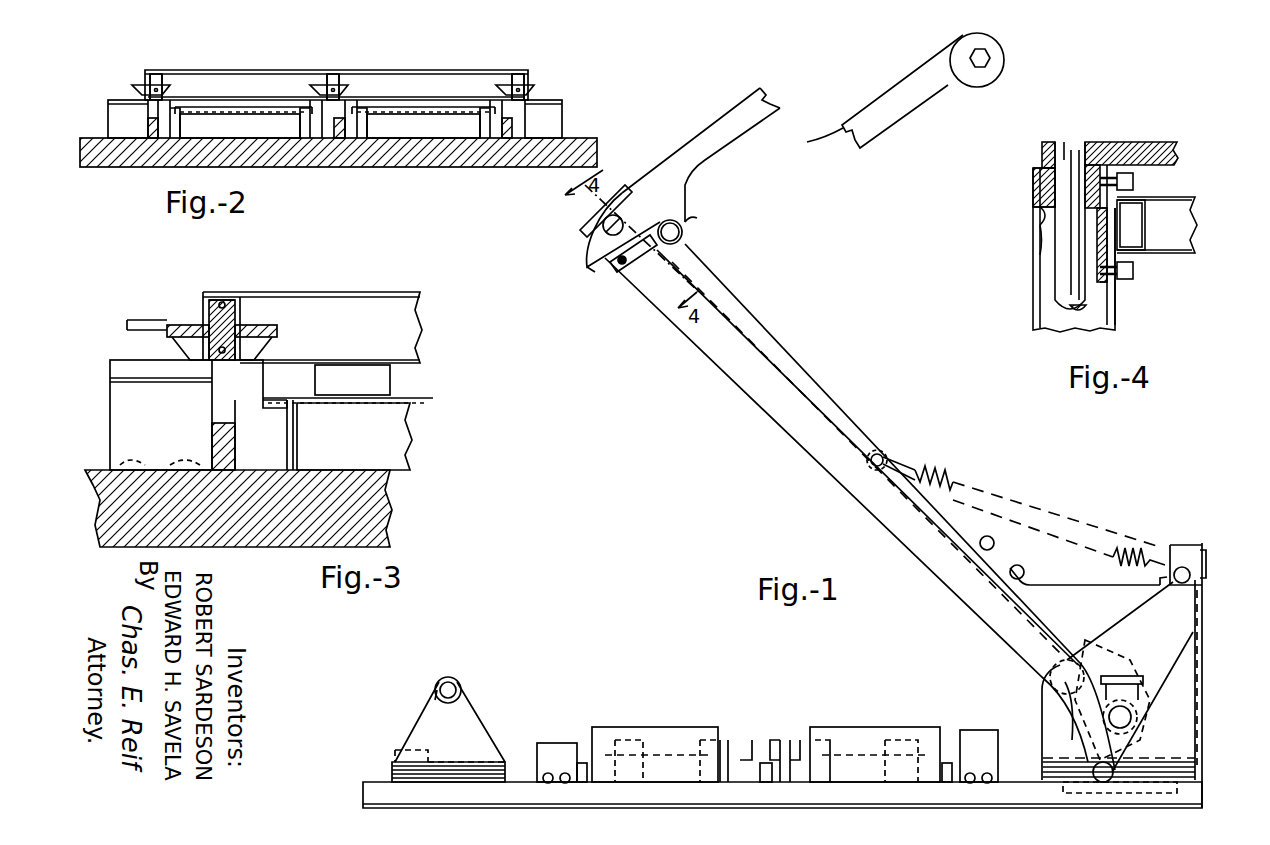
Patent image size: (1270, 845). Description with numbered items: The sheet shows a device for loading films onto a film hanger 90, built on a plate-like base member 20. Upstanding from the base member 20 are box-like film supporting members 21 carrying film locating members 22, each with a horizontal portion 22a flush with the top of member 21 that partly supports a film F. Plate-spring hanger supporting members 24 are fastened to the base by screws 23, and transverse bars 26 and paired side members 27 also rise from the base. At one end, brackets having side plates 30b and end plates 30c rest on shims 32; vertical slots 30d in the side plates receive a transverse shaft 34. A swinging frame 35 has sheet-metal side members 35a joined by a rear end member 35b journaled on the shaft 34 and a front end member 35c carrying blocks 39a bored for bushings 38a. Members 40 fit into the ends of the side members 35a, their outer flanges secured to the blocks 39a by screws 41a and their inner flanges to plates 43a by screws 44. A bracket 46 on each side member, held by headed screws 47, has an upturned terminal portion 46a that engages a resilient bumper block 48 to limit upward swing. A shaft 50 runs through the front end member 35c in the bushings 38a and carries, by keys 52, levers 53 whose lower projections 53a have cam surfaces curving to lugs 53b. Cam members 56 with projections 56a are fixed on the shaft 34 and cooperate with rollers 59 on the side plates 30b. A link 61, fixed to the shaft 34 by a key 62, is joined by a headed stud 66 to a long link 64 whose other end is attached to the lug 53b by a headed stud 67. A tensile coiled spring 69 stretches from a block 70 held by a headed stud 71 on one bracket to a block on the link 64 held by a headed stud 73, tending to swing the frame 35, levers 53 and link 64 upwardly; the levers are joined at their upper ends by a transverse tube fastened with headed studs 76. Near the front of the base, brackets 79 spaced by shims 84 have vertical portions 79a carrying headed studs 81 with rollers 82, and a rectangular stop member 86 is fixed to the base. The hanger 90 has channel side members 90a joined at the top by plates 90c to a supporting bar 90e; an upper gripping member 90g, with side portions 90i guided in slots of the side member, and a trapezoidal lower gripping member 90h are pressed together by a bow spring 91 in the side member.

In FIG. 2, the base member 20 is at (597, 150).
In FIG. 3, the base member 20 is at (385, 505).
In FIG. 1, the base member 20 is at (363, 791).
In FIG. 2, the film supporting members 21 is at (425, 118).
In FIG. 3, the film supporting members 21 is at (410, 428).
In FIG. 1, the film supporting members 21 is at (668, 755).
In FIG. 2, the film locating members 22 is at (168, 128).
In FIG. 3, the film locating members 22 is at (390, 380).
In FIG. 1, the film locating members 22 is at (628, 740).
In FIG. 3, the horizontal portion 22a is at (278, 408).
In FIG. 1, the horizontal portion 22a is at (785, 740).
In FIG. 1, the screws 23 is at (565, 783).
In FIG. 2, the hanger supporting members 24 is at (108, 121).
In FIG. 3, the hanger supporting members 24 is at (110, 438).
In FIG. 1, the hanger supporting members 24 is at (545, 743).
In FIG. 2, the transversely extending bars 26 is at (150, 130).
In FIG. 3, the transversely extending bars 26 is at (212, 443).
In FIG. 1, the transversely extending bars 26 is at (582, 762).
In FIG. 1, the members 27 is at (600, 727).
In FIG. 1, the side plate 30b is at (1118, 620).
In FIG. 1, the end plate 30c is at (1202, 612).
In FIG. 1, the vertically extending slots 30d is at (1135, 676).
In FIG. 1, the spacing plates or shims 32 is at (1195, 775).
In FIG. 1, the shaft 34 is at (1131, 713).
In FIG. 1, the swinging frame 35 is at (694, 355).
In FIG. 4, the longitudinally extending side members 35a is at (1190, 232).
In FIG. 1, the longitudinally extending side members 35a is at (780, 424).
In FIG. 1, the rear end member 35b is at (1130, 705).
In FIG. 4, the front end member 35c is at (1033, 298).
In FIG. 1, the front end member 35c is at (585, 225).
In FIG. 4, the bushings 38a is at (1040, 238).
In FIG. 4, the blocks 39a is at (1040, 215).
In FIG. 4, the members 40 is at (1143, 238).
In FIG. 1, the members 40 is at (612, 263).
In FIG. 4, the screws 41a is at (1133, 181).
In FIG. 1, the screws 41a is at (624, 266).
In FIG. 4, the plates 43a is at (1105, 282).
In FIG. 4, the screws 44 is at (1133, 272).
In FIG. 1, the bracket 46 is at (1075, 585).
In FIG. 1, the terminal portions 46a is at (1138, 550).
In FIG. 1, the headed screws 47 is at (1035, 540).
In FIG. 1, the blocks of resilient material 48 is at (1185, 545).
In FIG. 4, the shaft 50 is at (1078, 312).
In FIG. 1, the shaft 50 is at (603, 228).
In FIG. 4, the keys 52 is at (1064, 142).
In FIG. 1, the keys 52 is at (625, 196).
In FIG. 4, the levers 53 is at (1140, 142).
In FIG. 1, the levers 53 is at (762, 118).
In FIG. 1, the downwardly projecting portions 53a is at (588, 266).
In FIG. 1, the projections 53b is at (690, 222).
In FIG. 1, the cam members 56 is at (1070, 740).
In FIG. 1, the projections 56a is at (1112, 662).
In FIG. 1, the rollers 59 is at (1052, 668).
In FIG. 1, the link 61 is at (1155, 738).
In FIG. 1, the key 62 is at (1143, 678).
In FIG. 1, the long link 64 is at (815, 384).
In FIG. 1, the headed stud 66 is at (1097, 785).
In FIG. 1, the headed stud 67 is at (682, 234).
In FIG. 1, the tensile coiled spring 69 is at (955, 482).
In FIG. 1, the block 70 is at (1192, 572).
In FIG. 2, the headed stud 71 is at (250, 115).
In FIG. 1, the headed stud 73 is at (882, 455).
In FIG. 1, the headed studs 76 is at (1004, 59).
In FIG. 1, the brackets 79 is at (470, 708).
In FIG. 1, the vertical portions 79a is at (420, 712).
In FIG. 1, the headed studs 81 is at (456, 688).
In FIG. 1, the rollers 82 is at (448, 677).
In FIG. 1, the spacing plates or shims 84 is at (392, 770).
In FIG. 1, the stop member 86 is at (395, 752).
In FIG. 2, the film hanger 90 is at (451, 67).
In FIG. 3, the side members 90a is at (210, 300).
In FIG. 3, the upper and lower plates 90c is at (420, 300).
In FIG. 3, the transverse supporting bar 90e is at (130, 325).
In FIG. 2, the top gripping member 90g is at (150, 80).
In FIG. 3, the top gripping member 90g is at (240, 325).
In FIG. 2, the lower gripping member 90h is at (132, 88).
In FIG. 3, the lower gripping member 90h is at (175, 350).
In FIG. 3, the projecting side portions 90i is at (175, 325).
In FIG. 2, the bow springs 91 is at (160, 78).
In FIG. 3, the bow springs 91 is at (225, 297).
In FIG. 2, the foil F is at (215, 106).
In FIG. 3, the foil F is at (433, 399).